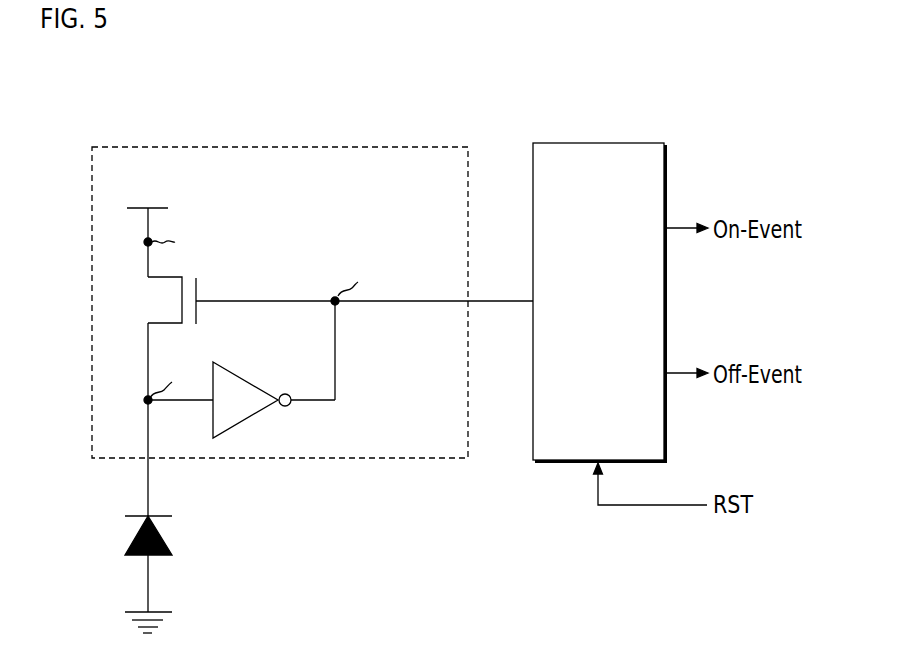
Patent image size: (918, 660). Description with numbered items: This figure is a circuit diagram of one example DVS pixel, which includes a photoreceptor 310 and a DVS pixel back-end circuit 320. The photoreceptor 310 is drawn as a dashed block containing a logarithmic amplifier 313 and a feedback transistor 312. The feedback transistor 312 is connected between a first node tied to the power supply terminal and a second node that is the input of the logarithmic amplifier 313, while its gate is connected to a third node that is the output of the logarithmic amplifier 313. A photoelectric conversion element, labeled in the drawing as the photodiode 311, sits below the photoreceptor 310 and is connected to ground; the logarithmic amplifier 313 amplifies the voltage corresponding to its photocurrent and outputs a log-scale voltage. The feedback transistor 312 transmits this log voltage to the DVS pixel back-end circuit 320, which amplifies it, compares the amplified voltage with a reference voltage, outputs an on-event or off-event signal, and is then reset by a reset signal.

The photoreceptor 310 is at (287, 147).
The photodiodes 311 is at (129, 536).
The feedback transistor 312 is at (178, 299).
The logarithmic amplifier 313 is at (250, 377).
The DVS pixel back-end circuit 320 is at (598, 142).